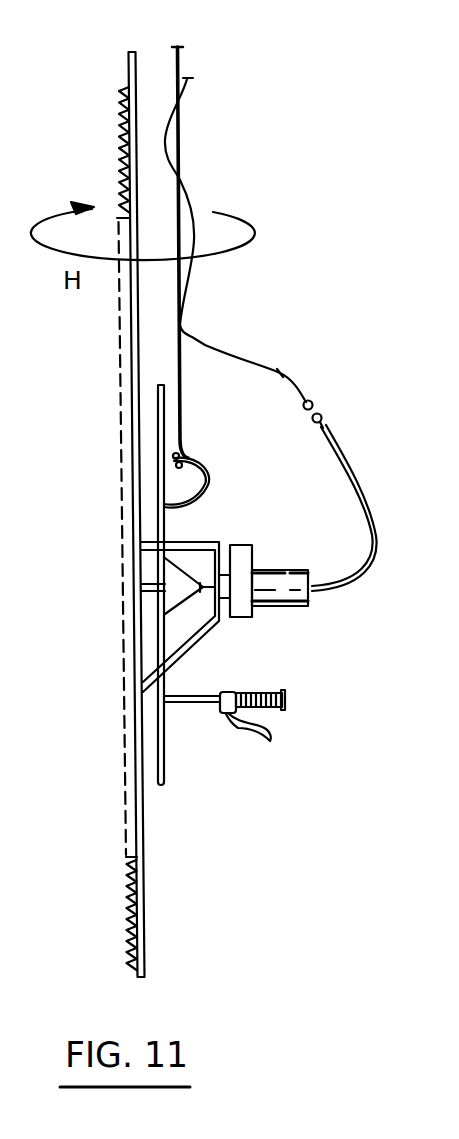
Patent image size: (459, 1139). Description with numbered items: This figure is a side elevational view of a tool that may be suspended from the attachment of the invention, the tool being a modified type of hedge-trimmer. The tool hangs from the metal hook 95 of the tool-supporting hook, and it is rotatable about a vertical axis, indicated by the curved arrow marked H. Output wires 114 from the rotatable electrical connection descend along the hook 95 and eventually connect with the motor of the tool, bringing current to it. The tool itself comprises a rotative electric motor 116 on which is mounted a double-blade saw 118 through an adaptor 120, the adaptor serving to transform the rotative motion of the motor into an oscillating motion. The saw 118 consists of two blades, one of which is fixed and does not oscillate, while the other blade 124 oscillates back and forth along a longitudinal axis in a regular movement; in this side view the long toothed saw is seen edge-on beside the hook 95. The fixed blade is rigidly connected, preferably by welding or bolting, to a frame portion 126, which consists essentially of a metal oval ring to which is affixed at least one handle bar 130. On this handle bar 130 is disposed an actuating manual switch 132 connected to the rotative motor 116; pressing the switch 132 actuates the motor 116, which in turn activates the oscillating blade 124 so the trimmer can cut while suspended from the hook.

The metal hook 95 is at (182, 68).
The output wires 114 is at (291, 375).
The rotative electric motor 116 is at (295, 569).
The double-blade saw 118 is at (114, 120).
The adaptor 120 is at (193, 540).
The oscillating blade 124 is at (122, 596).
The frame portion 126 is at (150, 388).
The handle bar 130 is at (202, 692).
The actuating manual switch 132 is at (233, 731).